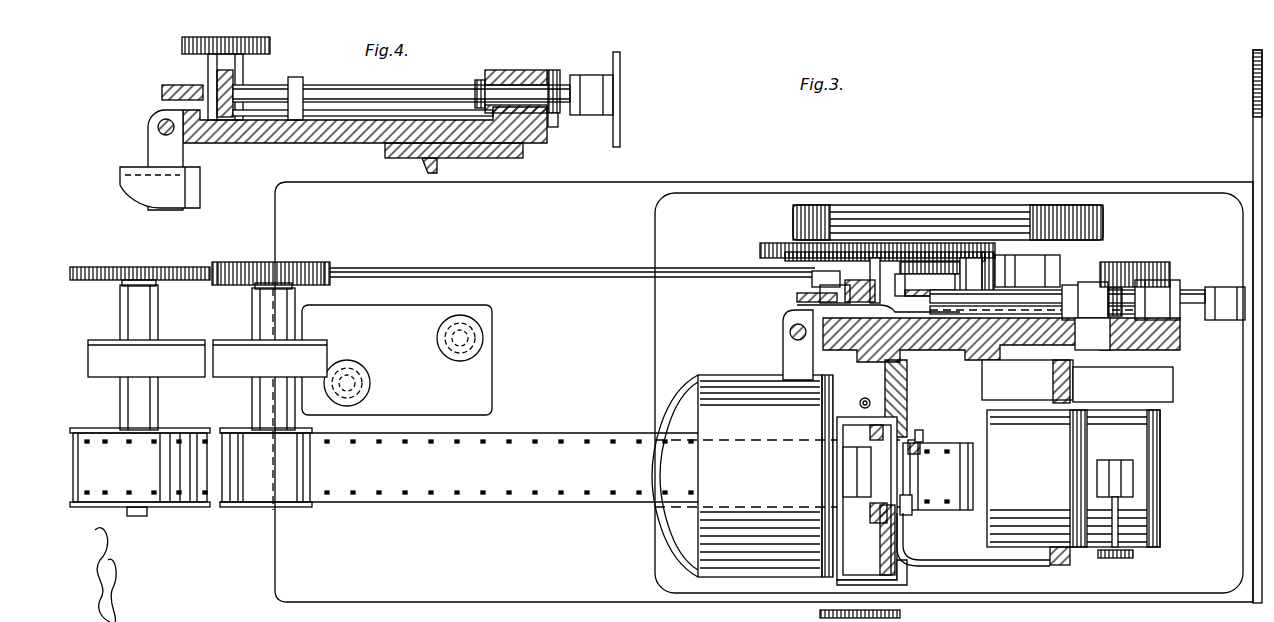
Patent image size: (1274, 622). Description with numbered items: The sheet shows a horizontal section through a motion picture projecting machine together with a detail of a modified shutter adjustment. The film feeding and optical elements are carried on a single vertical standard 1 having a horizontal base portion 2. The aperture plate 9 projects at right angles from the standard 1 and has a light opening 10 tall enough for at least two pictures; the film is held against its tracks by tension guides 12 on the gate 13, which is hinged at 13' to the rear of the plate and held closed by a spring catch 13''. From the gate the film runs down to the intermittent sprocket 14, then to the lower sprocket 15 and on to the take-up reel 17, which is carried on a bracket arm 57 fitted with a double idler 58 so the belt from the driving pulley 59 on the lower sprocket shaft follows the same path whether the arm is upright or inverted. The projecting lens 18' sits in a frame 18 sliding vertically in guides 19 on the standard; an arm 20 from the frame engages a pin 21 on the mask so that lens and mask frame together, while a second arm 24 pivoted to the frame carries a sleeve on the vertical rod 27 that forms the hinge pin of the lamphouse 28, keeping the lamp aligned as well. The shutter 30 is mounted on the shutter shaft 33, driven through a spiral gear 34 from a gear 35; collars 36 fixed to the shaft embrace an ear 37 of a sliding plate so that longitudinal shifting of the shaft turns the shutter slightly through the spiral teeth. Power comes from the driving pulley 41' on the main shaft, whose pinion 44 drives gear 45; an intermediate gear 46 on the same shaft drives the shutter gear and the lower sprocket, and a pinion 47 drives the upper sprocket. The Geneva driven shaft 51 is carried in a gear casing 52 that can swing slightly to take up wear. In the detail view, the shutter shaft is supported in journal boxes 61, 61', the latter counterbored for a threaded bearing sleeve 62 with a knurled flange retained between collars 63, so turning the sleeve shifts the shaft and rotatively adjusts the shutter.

In FIG. 4, the standard 1 is at (307, 138).
In FIG. 3, the standard 1 is at (1182, 340).
In FIG. 3, the base portion 2 is at (1160, 200).
In FIG. 3, the aperture plate 9 is at (912, 420).
In FIG. 3, the aperture 10 is at (920, 445).
In FIG. 3, the tension guides 12 is at (865, 490).
In FIG. 3, the gate 13 is at (866, 498).
In FIG. 3, the hinge 13' is at (825, 411).
In FIG. 3, the spring catch 13'' is at (865, 540).
In FIG. 3, the intermittent sprocket 14 is at (910, 512).
In FIG. 3, the lower sprocket 15 is at (862, 522).
In FIG. 3, the take-up reel 17 is at (172, 507).
In FIG. 4, the frame 18 is at (449, 168).
In FIG. 3, the frame 18 is at (1113, 381).
In FIG. 3, the projecting lens 18' is at (1091, 484).
In FIG. 4, the guides 19 is at (392, 158).
In FIG. 3, the arm 20 is at (955, 562).
In FIG. 3, the pin 21 is at (935, 462).
In FIG. 3, the arm 24 is at (1012, 317).
In FIG. 3, the vertical rod 27 is at (790, 331).
In FIG. 3, the lamphouse 28 is at (722, 378).
In FIG. 3, the shutter 30 is at (1253, 86).
In FIG. 4, the shutter shaft 33 is at (345, 80).
In FIG. 3, the shutter shaft 33 is at (1012, 292).
In FIG. 3, the spiral gear 34 is at (872, 258).
In FIG. 3, the gear 35 is at (797, 298).
In FIG. 3, the collars 36 is at (1070, 285).
In FIG. 3, the ear 37 is at (1095, 283).
In FIG. 3, the driving pulley 41' is at (948, 197).
In FIG. 3, the pinion 44 is at (968, 256).
In FIG. 3, the gear 45 is at (986, 250).
In FIG. 3, the intermediate gear 46 is at (800, 250).
In FIG. 3, the pinion 47 is at (925, 262).
In FIG. 3, the driven shaft 51 is at (923, 437).
In FIG. 3, the gear casing 52 is at (1027, 380).
In FIG. 3, the bracket arm 57 is at (232, 345).
In FIG. 3, the double idler 58 is at (236, 263).
In FIG. 3, the driving pulley 59 is at (812, 276).
In FIG. 4, the journal box 61 is at (302, 80).
In FIG. 4, the journal box 61' is at (516, 76).
In FIG. 4, the bearing sleeve 62 is at (556, 124).
In FIG. 4, the collars 63 is at (478, 80).